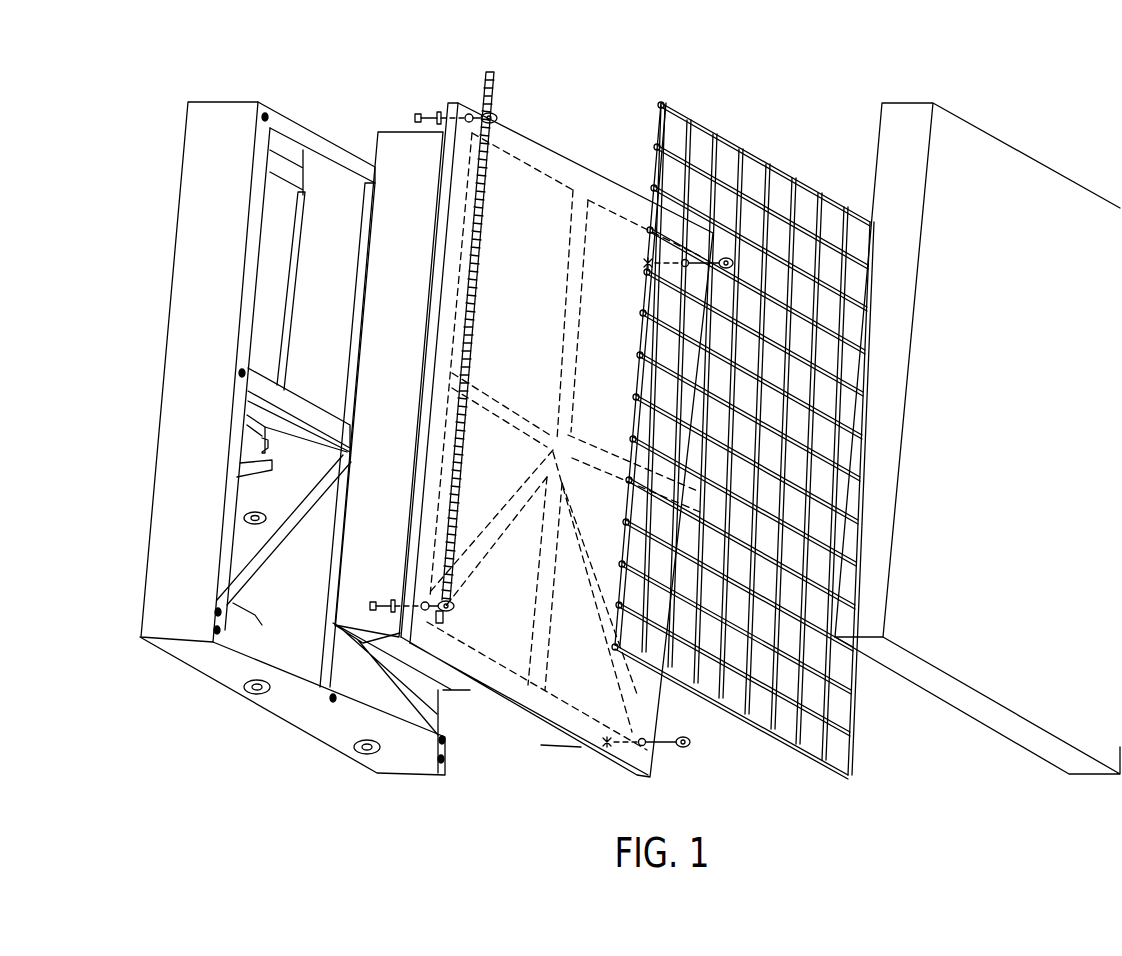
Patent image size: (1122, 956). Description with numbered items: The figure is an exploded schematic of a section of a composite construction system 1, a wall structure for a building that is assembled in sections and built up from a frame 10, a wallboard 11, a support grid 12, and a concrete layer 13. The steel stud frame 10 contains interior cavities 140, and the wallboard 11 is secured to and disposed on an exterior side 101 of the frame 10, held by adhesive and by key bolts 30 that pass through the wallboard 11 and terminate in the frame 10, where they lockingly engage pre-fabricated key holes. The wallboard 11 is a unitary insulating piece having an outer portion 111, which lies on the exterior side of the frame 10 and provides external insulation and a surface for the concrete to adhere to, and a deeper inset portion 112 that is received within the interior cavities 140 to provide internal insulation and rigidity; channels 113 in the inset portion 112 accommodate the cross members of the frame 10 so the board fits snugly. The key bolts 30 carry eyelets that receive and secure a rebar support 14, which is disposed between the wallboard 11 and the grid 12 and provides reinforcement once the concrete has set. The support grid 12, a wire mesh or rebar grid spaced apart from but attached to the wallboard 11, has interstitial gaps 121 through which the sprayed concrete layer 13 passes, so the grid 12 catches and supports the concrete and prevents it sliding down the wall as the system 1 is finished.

The composite construction system 1 is at (1083, 106).
The frame 10 is at (297, 727).
The wallboard 11 is at (557, 427).
The support grid 12 is at (743, 456).
The concrete layer 13 is at (692, 718).
The rebar support 14 is at (488, 260).
The key bolt 30 is at (494, 107).
The exterior side 101 is at (360, 95).
The outer portion 111 is at (455, 101).
The inset portion 112 is at (396, 130).
The channel 113 is at (557, 431).
The interstitial gap 121 is at (807, 191).
The interior cavity 140 is at (281, 181).